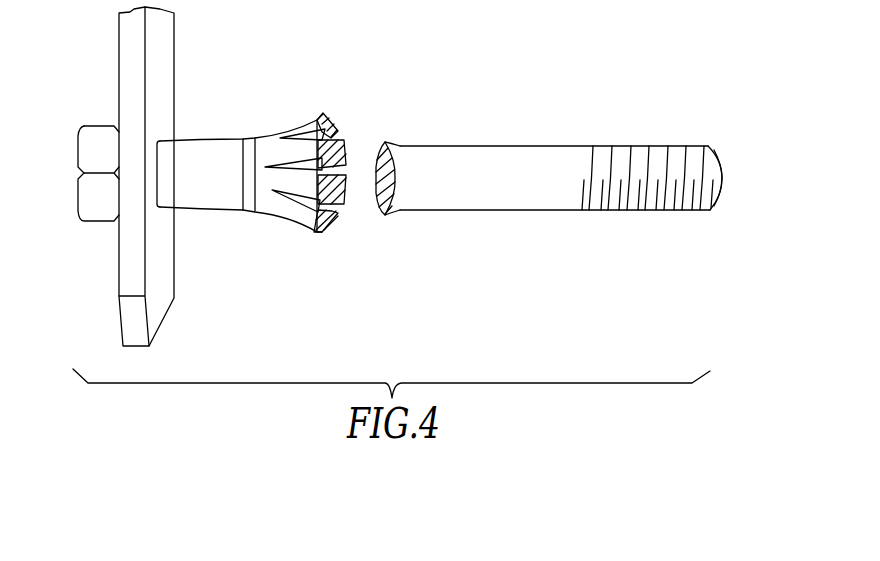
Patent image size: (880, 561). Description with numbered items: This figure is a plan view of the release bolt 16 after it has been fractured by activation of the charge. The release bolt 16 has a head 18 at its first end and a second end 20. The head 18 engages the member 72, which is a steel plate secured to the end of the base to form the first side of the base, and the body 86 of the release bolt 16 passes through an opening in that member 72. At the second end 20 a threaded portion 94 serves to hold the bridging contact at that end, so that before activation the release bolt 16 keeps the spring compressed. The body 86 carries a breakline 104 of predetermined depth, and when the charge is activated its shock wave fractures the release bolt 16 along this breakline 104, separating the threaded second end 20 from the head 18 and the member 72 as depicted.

The release bolt 16 is at (440, 306).
The head 18 is at (88, 152).
The second end 20 is at (720, 188).
The member 72 is at (174, 63).
The body 86 is at (455, 146).
The threaded portion 94 is at (638, 158).
The breakline 104 is at (363, 126).